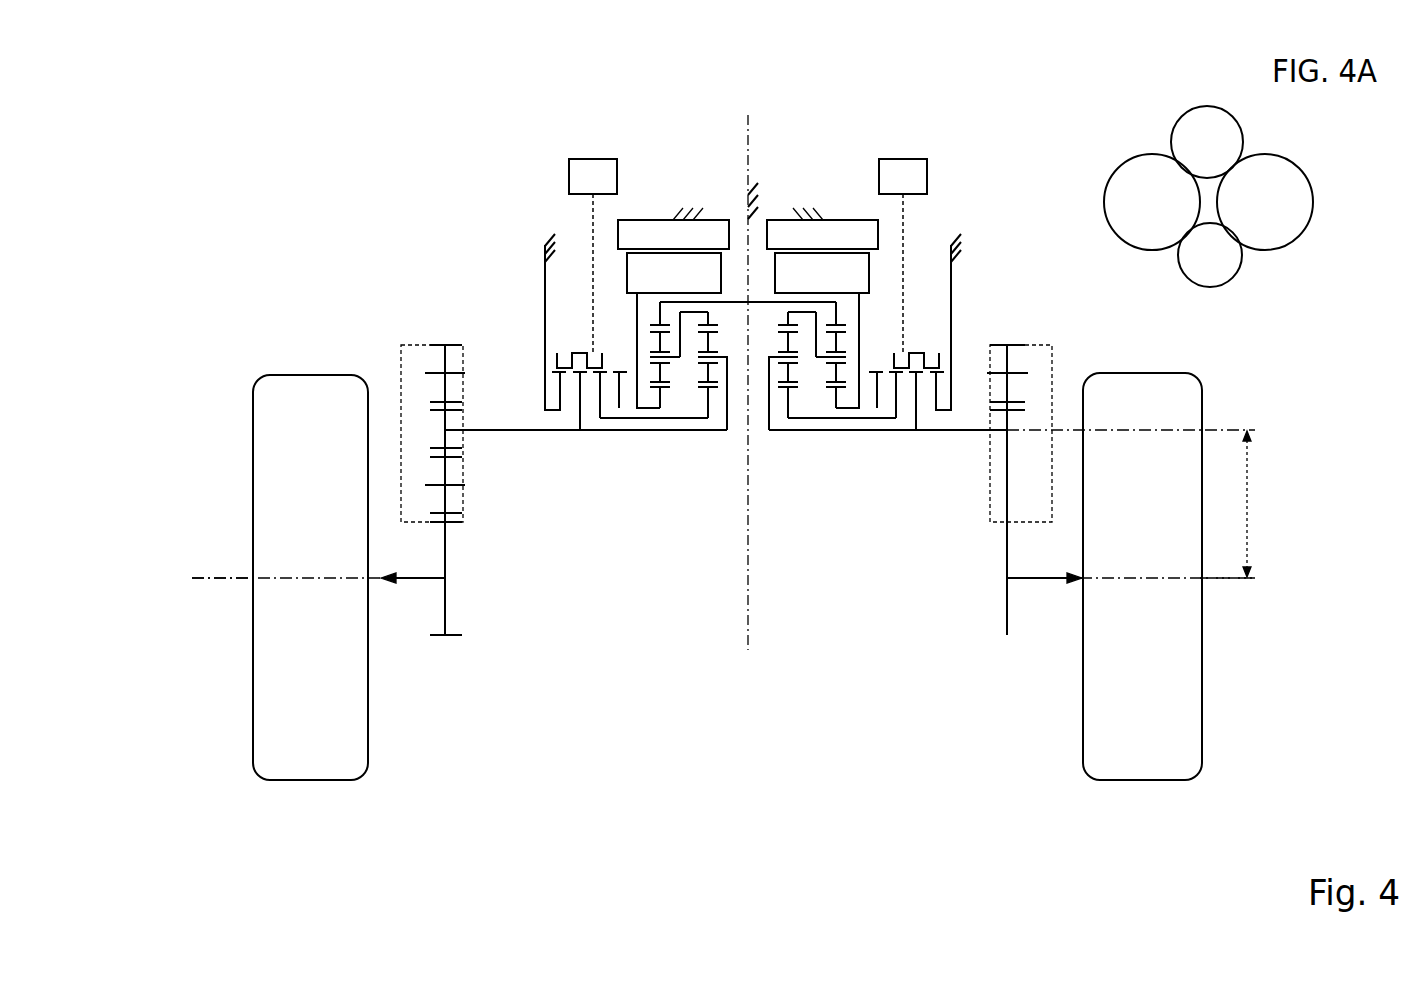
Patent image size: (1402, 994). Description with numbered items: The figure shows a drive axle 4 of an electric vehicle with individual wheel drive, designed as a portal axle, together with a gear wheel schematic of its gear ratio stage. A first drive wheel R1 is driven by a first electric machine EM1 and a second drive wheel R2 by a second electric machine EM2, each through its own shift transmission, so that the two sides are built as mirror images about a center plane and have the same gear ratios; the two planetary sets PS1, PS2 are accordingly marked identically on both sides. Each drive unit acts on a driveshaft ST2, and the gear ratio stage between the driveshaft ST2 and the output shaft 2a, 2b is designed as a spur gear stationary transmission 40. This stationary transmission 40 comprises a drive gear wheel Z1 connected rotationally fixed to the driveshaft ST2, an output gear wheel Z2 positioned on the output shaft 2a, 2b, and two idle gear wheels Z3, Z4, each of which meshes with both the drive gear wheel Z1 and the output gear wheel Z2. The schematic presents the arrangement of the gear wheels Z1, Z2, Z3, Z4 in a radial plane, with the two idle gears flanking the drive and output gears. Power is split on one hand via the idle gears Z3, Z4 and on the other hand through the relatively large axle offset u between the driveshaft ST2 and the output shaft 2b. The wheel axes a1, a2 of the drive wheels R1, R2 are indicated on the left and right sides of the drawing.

In FIG. 4, the first electric machine EM1 is at (653, 210).
In FIG. 4, the second electric machine EM2 is at (833, 210).
In FIG. 4, the drive axle 4 is at (945, 193).
In FIG. 4, the first planetary set PS1 is at (660, 444).
In FIG. 4, the second planetary set PS2 is at (708, 444).
In FIG. 4, the driveshaft ST2 is at (580, 432).
In FIG. 4, the spur gear stationary transmission 40 is at (443, 642).
In FIG. 4, the drive gear wheel Z1 is at (448, 440).
In FIG. 4A, the drive gear wheel Z1 is at (1220, 263).
In FIG. 4, the output gear wheel Z2 is at (448, 608).
In FIG. 4A, the output gear wheel Z2 is at (1203, 127).
In FIG. 4A, the idle gear wheel Z3 is at (1282, 183).
In FIG. 4, the idle gear wheel Z4 is at (448, 500).
In FIG. 4A, the idle gear wheel Z4 is at (1140, 180).
In FIG. 4, the output shaft 2a is at (410, 580).
In FIG. 4, the output shaft 2b is at (1033, 580).
In FIG. 4, the first drive wheel R1 is at (309, 747).
In FIG. 4, the second drive wheel R2 is at (1110, 760).
In FIG. 4, the first wheel axis a1 is at (237, 578).
In FIG. 4, the second wheel axis a2 is at (1228, 578).
In FIG. 4, the axle offset u is at (1138, 503).